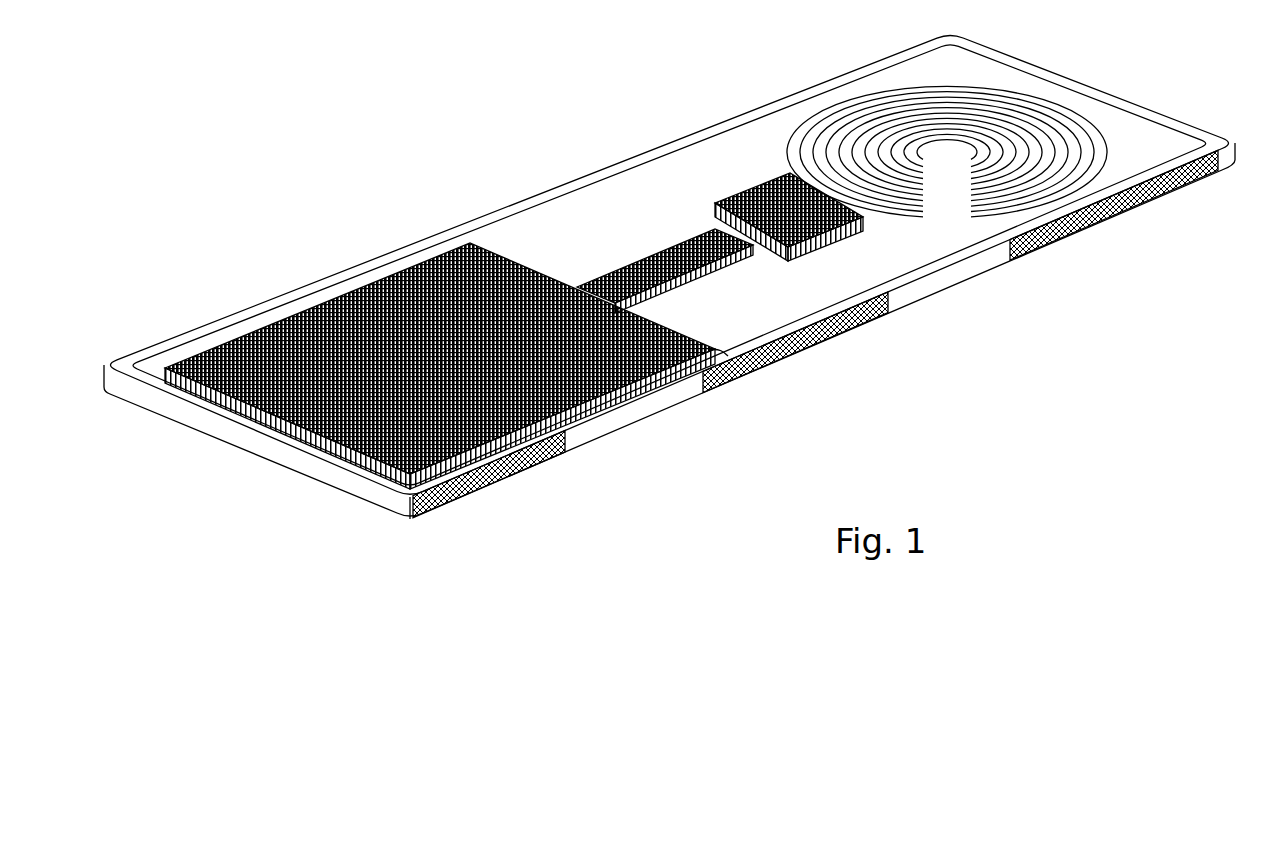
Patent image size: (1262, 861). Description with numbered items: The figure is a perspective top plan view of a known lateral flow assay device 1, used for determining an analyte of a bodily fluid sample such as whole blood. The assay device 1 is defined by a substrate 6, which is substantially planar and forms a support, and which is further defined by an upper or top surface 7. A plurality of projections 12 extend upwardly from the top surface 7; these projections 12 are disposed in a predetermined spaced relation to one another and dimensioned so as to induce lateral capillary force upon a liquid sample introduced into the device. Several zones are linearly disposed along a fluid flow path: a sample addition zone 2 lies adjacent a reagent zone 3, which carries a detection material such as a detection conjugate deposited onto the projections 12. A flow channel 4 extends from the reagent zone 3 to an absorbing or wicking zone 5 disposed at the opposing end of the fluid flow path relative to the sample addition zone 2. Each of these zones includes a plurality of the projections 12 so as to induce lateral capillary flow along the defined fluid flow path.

The lateral flow assay device 1 is at (500, 128).
The sample addition zone 2 is at (920, 117).
The reagent zone 3 is at (770, 178).
The flow channel 4 is at (667, 249).
The absorbing or wicking zone 5 is at (321, 297).
The substrate 6 is at (847, 331).
The top surface 7 is at (741, 378).
The projections 12 is at (427, 252).